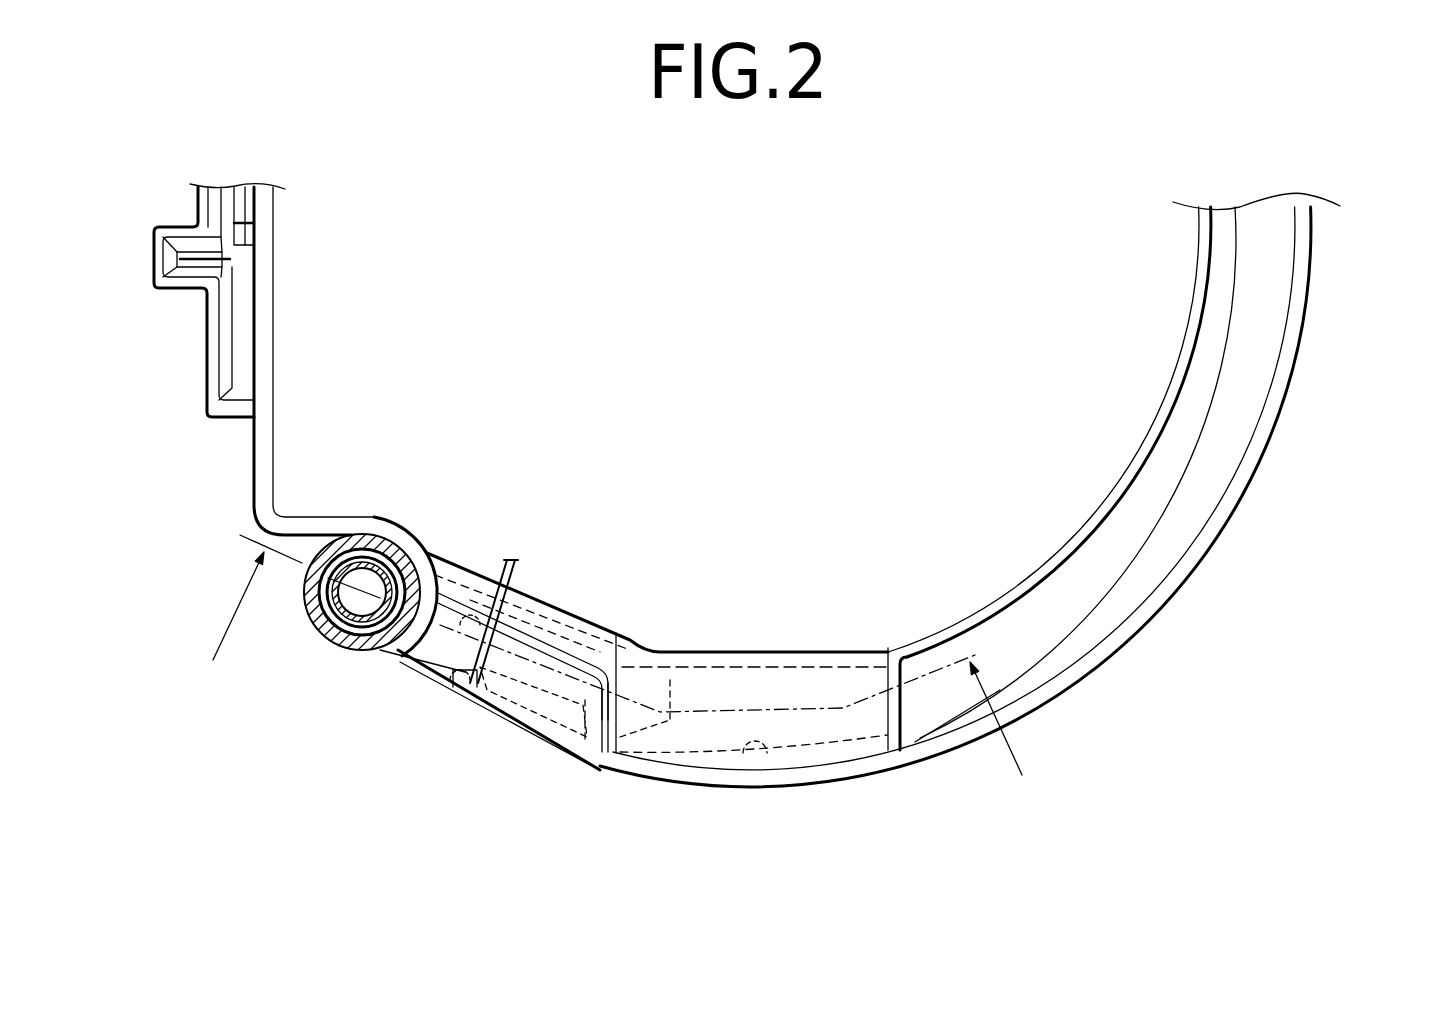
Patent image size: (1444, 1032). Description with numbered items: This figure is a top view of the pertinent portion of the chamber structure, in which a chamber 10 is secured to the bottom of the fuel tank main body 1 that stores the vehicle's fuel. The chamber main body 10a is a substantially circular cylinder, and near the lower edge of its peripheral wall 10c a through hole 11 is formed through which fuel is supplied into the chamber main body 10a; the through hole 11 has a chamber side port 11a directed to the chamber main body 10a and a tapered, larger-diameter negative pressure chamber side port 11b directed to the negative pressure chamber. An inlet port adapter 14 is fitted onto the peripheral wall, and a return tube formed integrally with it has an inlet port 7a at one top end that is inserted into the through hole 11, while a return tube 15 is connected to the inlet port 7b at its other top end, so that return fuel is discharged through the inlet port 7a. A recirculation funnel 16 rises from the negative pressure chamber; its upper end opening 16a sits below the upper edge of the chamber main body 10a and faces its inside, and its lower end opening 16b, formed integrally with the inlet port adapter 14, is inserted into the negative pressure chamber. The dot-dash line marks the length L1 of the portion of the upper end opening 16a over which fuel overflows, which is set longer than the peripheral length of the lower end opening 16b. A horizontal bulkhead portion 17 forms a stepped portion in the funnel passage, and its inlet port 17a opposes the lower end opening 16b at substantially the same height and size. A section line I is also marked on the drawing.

The fuel tank main body 1 is at (1367, 435).
The chamber 10 is at (1330, 266).
The chamber main body 10a is at (250, 460).
The peripheral wall 10c is at (440, 692).
The return tube 15 is at (307, 610).
The inlet port 7b is at (352, 640).
The inlet port 7a is at (680, 650).
The inlet port adapter 14 is at (488, 738).
The recirculation funnel 16 is at (550, 632).
The upper end opening 16a is at (614, 633).
The lower end opening 16b is at (450, 688).
The horizontal bulkhead portion 17 is at (527, 700).
The inlet port 17a is at (478, 612).
The through hole 11 is at (788, 680).
The chamber side port 11a is at (916, 745).
The negative pressure chamber side port 11b is at (572, 760).
The length of overflow portion L1 is at (457, 565).
The section line I- I is at (619, 676).